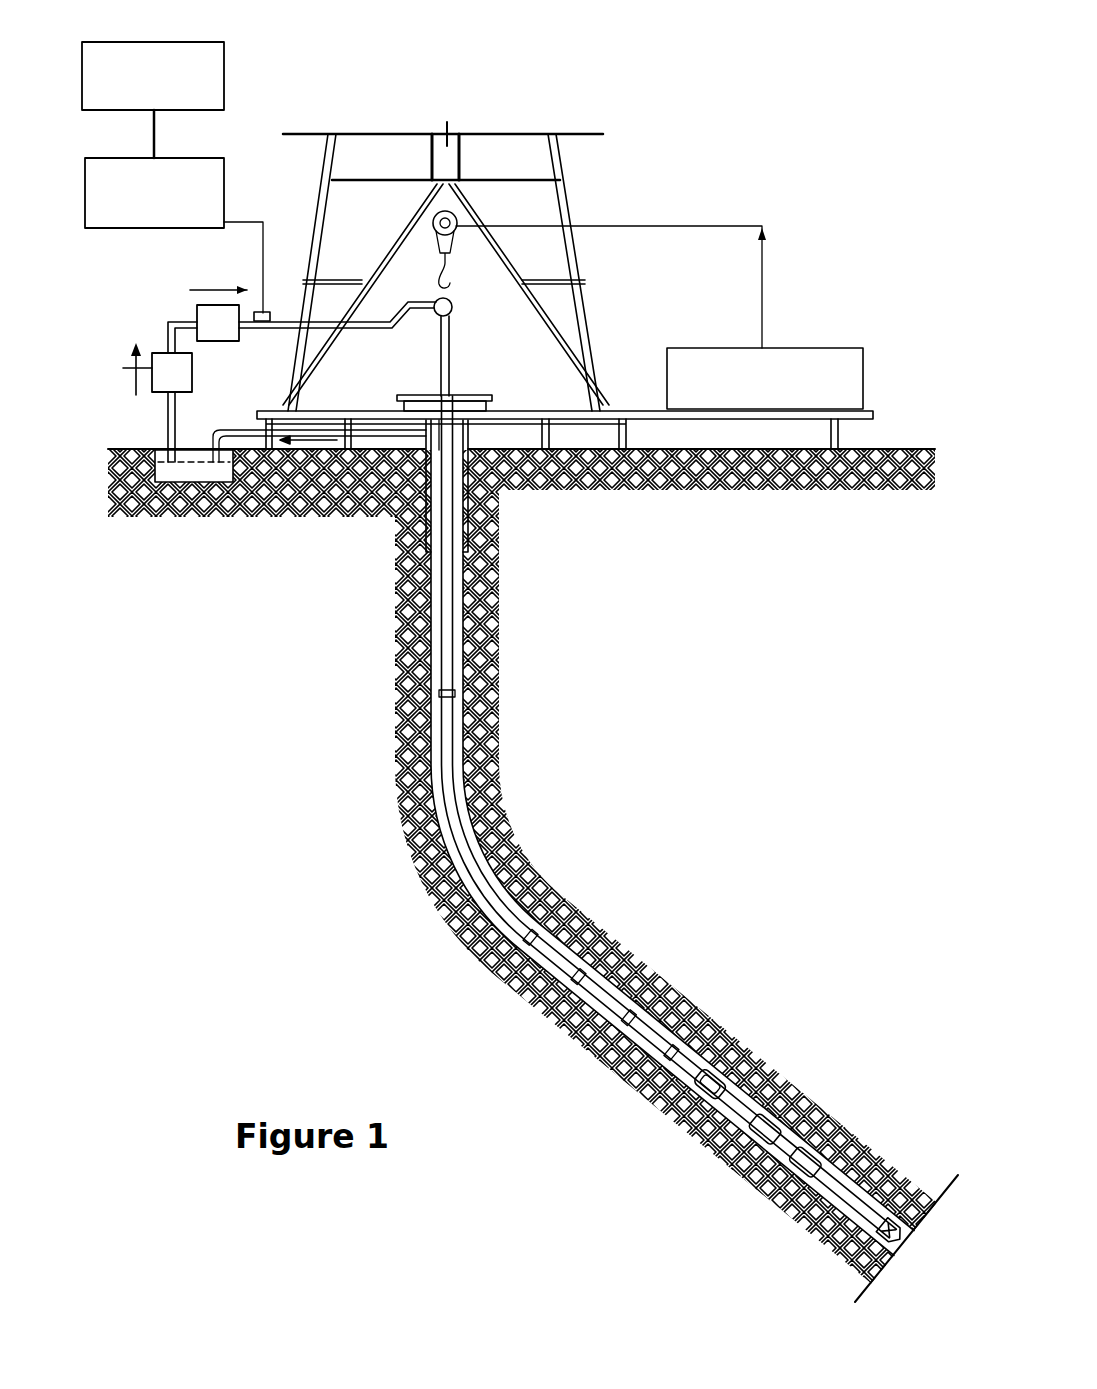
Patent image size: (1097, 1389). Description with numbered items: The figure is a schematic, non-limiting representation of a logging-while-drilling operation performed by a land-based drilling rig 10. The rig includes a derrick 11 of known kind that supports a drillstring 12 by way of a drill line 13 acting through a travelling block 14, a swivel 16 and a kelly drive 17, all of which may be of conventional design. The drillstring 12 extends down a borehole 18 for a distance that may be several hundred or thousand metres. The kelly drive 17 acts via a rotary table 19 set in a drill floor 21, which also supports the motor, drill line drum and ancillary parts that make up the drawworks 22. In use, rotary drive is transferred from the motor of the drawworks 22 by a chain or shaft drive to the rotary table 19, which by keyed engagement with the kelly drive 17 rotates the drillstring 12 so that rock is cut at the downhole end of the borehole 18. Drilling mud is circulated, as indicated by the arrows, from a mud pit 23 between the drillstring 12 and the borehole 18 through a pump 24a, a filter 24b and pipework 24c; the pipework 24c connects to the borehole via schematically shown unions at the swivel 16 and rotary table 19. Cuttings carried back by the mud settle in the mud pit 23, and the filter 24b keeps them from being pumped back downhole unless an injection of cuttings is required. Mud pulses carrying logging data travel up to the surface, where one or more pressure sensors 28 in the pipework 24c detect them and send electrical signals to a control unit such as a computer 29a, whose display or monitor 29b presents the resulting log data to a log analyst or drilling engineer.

The drilling rig 10 is at (768, 109).
The derrick 11 is at (588, 257).
The drillstring 12 is at (452, 644).
The drill line 13 is at (462, 156).
The travelling block 14 is at (456, 225).
The swivel 16 is at (454, 305).
The kelly drive 17 is at (456, 351).
The borehole 18 is at (460, 595).
The rotary table 19 is at (405, 396).
The drill floor 21 is at (546, 412).
The drawworks 22 is at (690, 346).
The mud pit 23 is at (160, 460).
The pump 24a is at (197, 306).
The filter 24b is at (125, 369).
The pipework 24c is at (172, 322).
The pressure sensor 28 is at (264, 312).
The control unit 29a is at (150, 229).
The display or monitor 29b is at (145, 42).